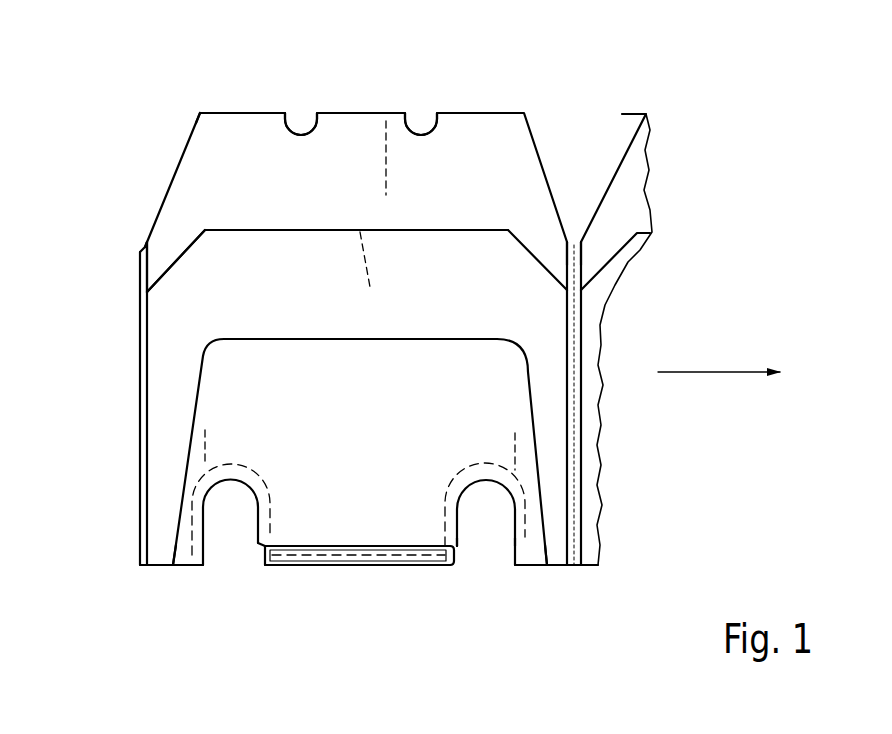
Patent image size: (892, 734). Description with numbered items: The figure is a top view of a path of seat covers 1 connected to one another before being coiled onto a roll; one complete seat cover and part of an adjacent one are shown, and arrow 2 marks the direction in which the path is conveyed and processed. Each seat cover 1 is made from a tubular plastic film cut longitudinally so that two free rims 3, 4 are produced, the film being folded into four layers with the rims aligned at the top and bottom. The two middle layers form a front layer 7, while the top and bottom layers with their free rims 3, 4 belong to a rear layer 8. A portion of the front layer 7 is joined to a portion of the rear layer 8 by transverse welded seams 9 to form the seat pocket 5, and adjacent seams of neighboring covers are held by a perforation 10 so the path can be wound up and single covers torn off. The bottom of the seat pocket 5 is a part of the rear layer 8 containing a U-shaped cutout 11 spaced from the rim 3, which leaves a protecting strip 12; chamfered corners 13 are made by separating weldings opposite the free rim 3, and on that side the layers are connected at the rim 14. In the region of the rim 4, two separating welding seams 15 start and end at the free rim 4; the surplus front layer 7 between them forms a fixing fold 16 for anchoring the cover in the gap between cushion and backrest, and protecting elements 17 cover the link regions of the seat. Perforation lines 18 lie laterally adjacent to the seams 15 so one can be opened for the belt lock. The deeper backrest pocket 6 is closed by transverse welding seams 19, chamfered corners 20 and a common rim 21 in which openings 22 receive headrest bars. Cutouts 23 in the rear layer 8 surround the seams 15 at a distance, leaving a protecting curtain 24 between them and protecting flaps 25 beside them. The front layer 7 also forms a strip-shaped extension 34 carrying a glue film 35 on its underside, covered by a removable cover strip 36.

The seat cover 1 is at (603, 78).
The arrow 2 is at (722, 372).
The free rim 3 is at (153, 567).
The free rim 4 is at (370, 566).
The seat pocket 5 is at (182, 249).
The backrest pocket 6 is at (178, 148).
The front layer 7 is at (360, 231).
The rear layer 8 is at (413, 279).
The transverse welded seams 9 is at (146, 405).
The perforation 10 is at (139, 367).
The U-shaped cutout 11 is at (390, 341).
The protecting strip 12 is at (180, 309).
The chamfered corners 13 is at (144, 248).
The rim 14 is at (457, 229).
The separating welding seams 15 is at (206, 546).
The fixing fold 16 is at (340, 537).
The protecting elements 17 is at (180, 542).
The perforation lines 18 is at (206, 457).
The transverse welding seams 19 is at (146, 273).
The chamfered corners 20 is at (193, 125).
The rim 21 is at (231, 112).
The openings 22 is at (305, 128).
The cutouts 23 is at (268, 533).
The protecting curtain 24 is at (383, 517).
The protecting flaps 25 is at (550, 530).
The strip-shaped extension 34 is at (300, 532).
The glue film 35 is at (350, 556).
The cover strip 36 is at (434, 557).